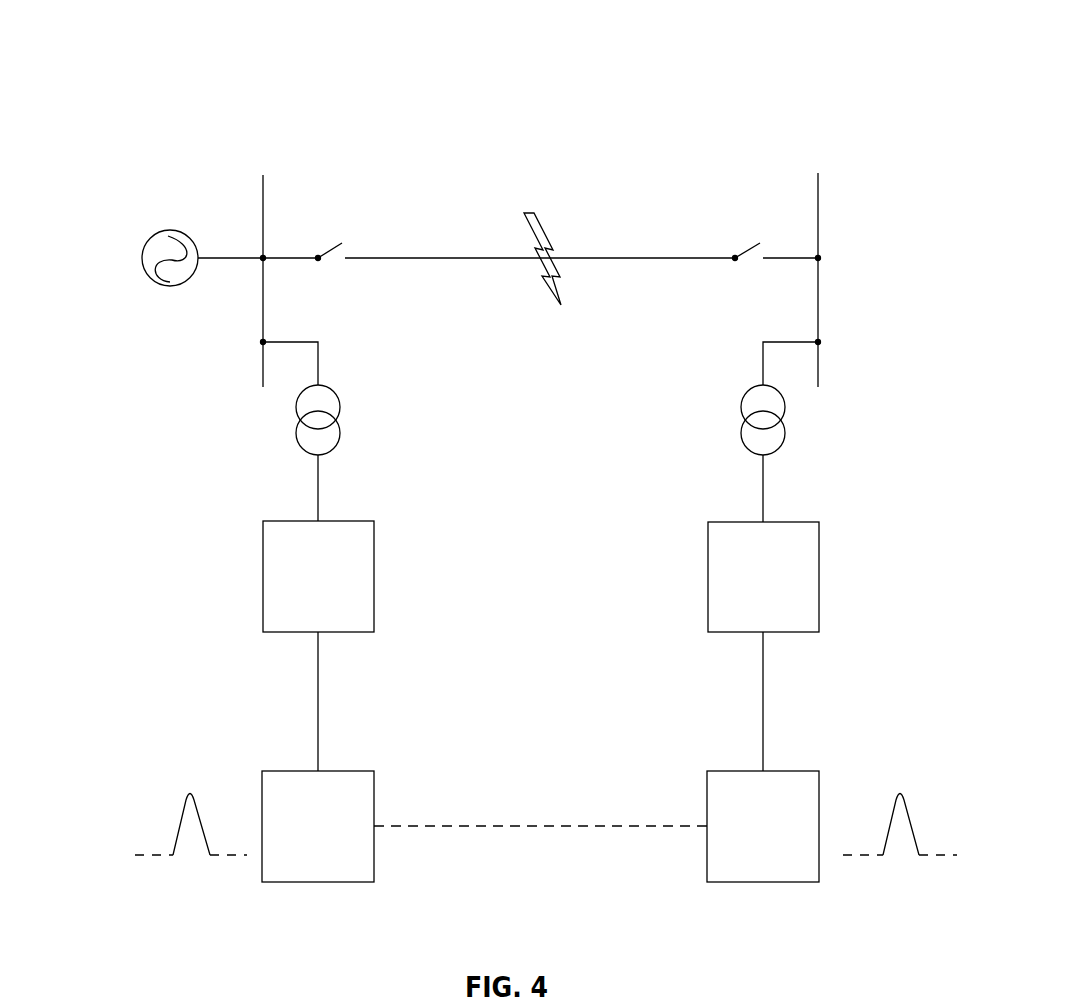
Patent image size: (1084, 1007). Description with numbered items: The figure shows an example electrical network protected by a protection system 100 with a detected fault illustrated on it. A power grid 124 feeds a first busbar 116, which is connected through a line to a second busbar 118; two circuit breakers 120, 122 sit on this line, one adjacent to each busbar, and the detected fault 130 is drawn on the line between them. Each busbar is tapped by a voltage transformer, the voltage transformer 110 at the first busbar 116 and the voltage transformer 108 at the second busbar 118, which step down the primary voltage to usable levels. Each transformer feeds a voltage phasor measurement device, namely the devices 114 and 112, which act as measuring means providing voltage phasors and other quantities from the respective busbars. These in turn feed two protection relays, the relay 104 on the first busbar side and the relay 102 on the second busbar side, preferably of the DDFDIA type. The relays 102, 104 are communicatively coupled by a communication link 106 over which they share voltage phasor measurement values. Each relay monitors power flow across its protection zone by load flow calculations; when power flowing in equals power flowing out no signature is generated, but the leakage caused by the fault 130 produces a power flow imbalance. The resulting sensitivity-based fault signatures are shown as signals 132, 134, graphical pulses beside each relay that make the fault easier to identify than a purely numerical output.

The protection system 100 is at (302, 482).
The protection relay 102 is at (819, 793).
The protection relay 104 is at (374, 782).
The communication link 106 is at (520, 826).
The voltage transformer 108 is at (786, 415).
The voltage transformer 110 is at (333, 387).
The voltage phasor measurement device 112 is at (819, 577).
The voltage phasor measurement device 114 is at (374, 576).
The first busbar 116 is at (266, 126).
The second busbar 118 is at (825, 126).
The circuit breaker 120 is at (327, 250).
The circuit breaker 122 is at (743, 250).
The power grid 124 is at (143, 251).
The detected fault 130 is at (572, 284).
The signal 132 is at (192, 845).
The signal 134 is at (898, 847).